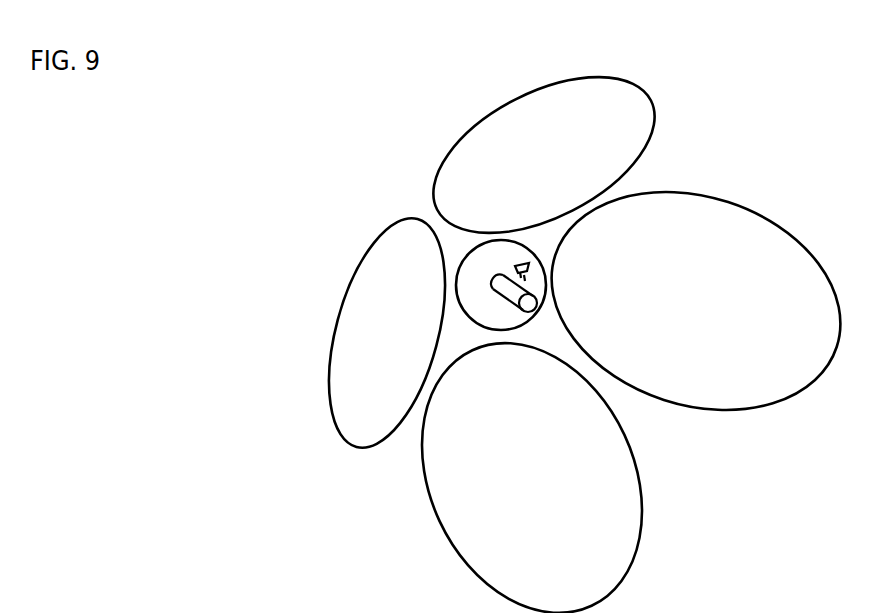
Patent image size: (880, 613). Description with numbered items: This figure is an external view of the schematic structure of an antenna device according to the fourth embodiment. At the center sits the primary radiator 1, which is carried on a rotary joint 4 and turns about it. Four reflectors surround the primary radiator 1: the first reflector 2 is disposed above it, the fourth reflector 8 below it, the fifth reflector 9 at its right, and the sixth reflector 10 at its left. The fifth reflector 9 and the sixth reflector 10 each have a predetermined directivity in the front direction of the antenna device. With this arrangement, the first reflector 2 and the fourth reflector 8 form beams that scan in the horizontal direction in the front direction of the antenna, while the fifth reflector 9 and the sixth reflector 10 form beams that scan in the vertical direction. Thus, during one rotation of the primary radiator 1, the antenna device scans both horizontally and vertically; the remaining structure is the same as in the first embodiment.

The primary radiator 1 is at (543, 323).
The first reflector 2 is at (643, 103).
The rotary joint 4 is at (460, 248).
The fourth reflector 8 is at (467, 548).
The fifth reflector 9 is at (753, 223).
The sixth reflector 10 is at (347, 313).